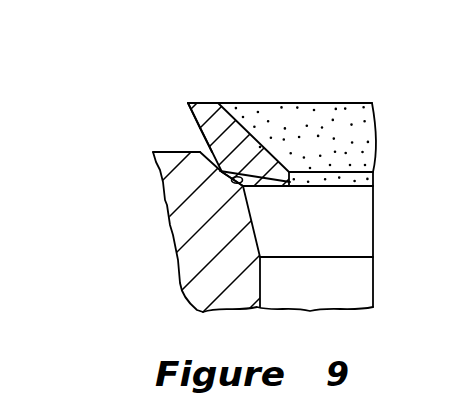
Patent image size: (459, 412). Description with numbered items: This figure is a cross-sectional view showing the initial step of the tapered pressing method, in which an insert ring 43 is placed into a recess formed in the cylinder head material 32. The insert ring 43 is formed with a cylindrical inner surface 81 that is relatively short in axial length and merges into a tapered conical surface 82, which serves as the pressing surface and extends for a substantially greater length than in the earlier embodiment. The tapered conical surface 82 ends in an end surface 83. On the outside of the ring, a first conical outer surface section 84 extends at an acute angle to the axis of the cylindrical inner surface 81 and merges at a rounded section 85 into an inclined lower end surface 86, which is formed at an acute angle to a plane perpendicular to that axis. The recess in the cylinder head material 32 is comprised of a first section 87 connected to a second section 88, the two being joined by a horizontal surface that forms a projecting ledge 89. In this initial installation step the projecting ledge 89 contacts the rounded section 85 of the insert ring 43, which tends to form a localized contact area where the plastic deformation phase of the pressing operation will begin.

The cylinder head material 32 is at (192, 262).
The insert ring 43 is at (329, 125).
The cylindrical inner surface 81 is at (312, 178).
The tapered conical surface 82 is at (258, 124).
The end surface 83 is at (200, 100).
The first conical outer surface section 84 is at (193, 128).
The rounded section 85 is at (220, 172).
The inclined lower end surface 86 is at (258, 187).
The first section 87 is at (200, 155).
The second section 88 is at (236, 184).
The projecting ledge 89 is at (222, 170).